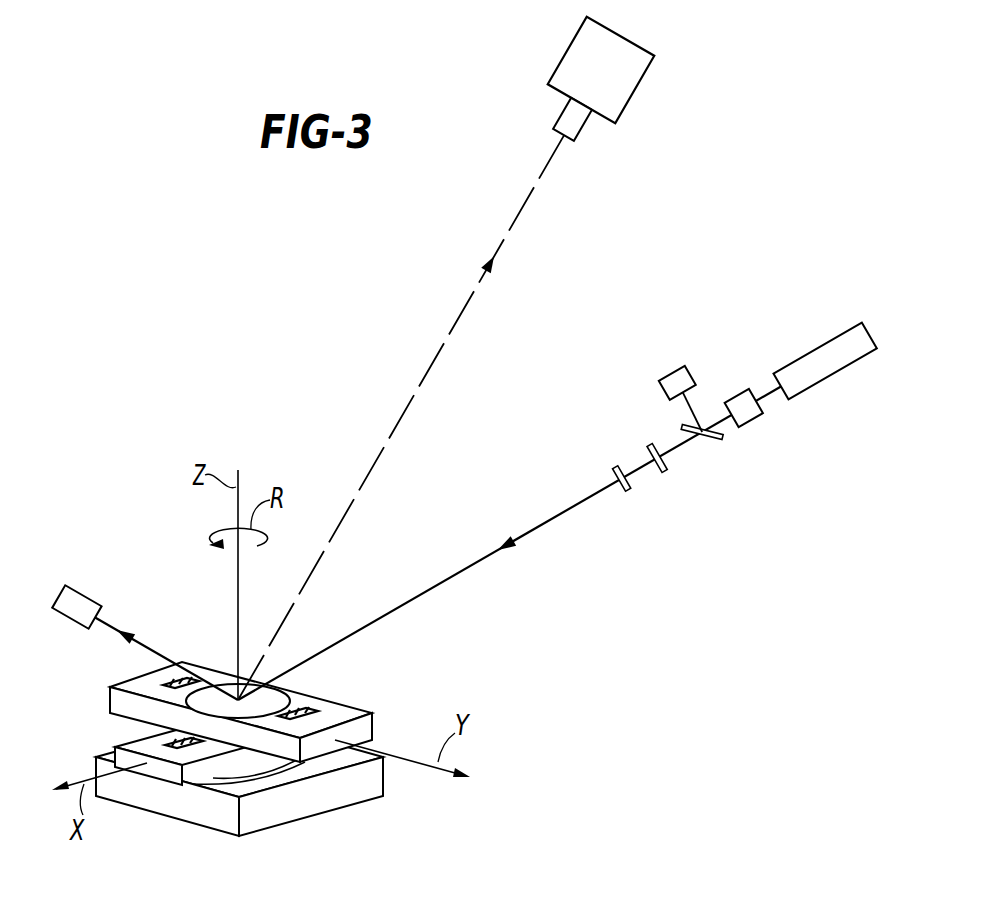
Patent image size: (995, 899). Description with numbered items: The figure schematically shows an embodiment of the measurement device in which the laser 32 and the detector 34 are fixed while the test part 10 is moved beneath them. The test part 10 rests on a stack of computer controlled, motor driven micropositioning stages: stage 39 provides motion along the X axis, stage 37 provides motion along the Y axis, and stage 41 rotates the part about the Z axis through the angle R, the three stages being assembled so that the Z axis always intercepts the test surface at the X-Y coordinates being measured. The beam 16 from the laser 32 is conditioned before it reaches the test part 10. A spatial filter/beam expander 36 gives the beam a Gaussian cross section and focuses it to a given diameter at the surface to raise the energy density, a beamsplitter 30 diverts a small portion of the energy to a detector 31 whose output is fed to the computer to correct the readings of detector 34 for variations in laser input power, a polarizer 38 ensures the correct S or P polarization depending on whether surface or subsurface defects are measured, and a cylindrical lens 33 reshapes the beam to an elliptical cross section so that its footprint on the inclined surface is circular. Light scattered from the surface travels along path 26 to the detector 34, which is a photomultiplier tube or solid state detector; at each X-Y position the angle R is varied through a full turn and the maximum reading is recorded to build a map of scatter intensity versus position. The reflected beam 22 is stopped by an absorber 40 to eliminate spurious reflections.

The test part 10 is at (284, 692).
The beam 16 is at (527, 533).
The reflected beam 22 is at (150, 648).
The scattered light path 26 is at (438, 354).
The beamsplitter 30 is at (712, 434).
The detector 31 is at (691, 367).
The laser 32 is at (811, 354).
The cylindrical lens 33 is at (627, 485).
The detector 34 is at (650, 77).
The spatial filter/beam expander 36 is at (760, 413).
The micropositioning stage 37 is at (130, 687).
The polarizer 38 is at (663, 468).
The micropositioning stage 39 is at (130, 743).
The absorber 40 is at (83, 591).
The stage 41 is at (335, 800).